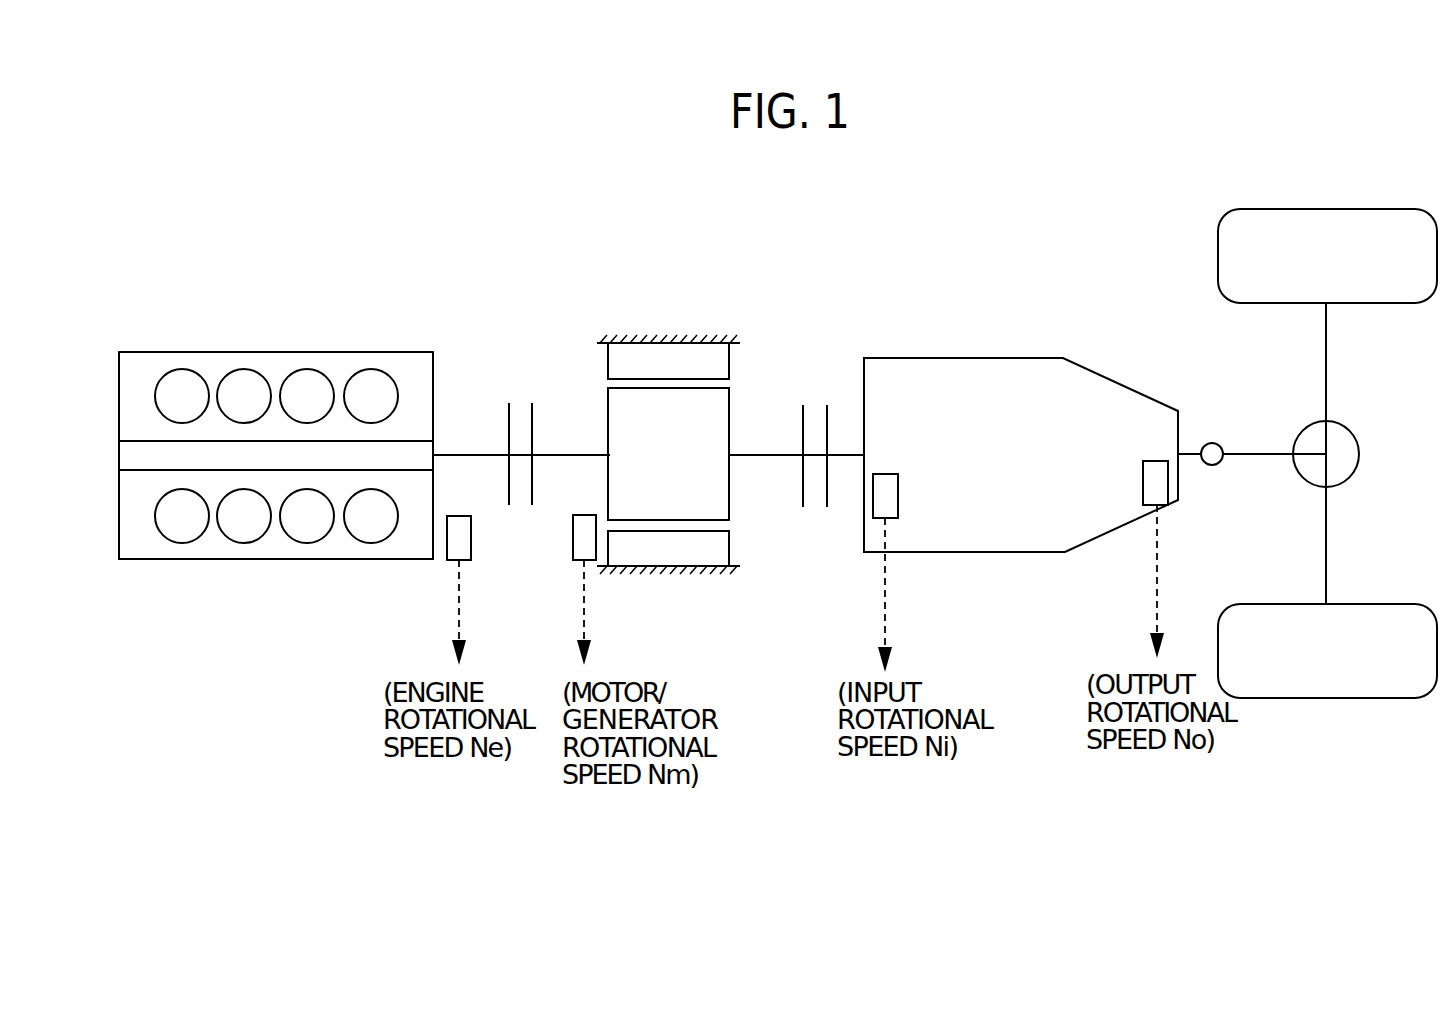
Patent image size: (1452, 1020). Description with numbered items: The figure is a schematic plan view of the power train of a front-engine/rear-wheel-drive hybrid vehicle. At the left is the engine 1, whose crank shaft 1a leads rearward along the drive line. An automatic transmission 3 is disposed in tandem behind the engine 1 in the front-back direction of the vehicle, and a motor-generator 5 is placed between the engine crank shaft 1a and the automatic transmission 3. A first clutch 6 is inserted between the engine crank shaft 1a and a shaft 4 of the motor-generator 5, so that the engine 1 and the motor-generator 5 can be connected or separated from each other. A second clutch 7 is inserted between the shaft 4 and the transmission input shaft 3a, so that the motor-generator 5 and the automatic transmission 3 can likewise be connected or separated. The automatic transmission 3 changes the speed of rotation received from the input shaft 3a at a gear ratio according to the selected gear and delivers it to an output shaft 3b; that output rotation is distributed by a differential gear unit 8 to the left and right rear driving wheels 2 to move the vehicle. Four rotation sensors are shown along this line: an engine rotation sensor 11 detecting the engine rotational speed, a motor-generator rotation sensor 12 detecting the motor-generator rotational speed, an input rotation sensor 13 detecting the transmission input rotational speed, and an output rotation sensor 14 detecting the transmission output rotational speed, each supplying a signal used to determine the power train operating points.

The engine 1 is at (222, 348).
The crank shaft 1a is at (470, 452).
The driving wheels 2 is at (1383, 208).
The automatic transmission 3 is at (991, 352).
The transmission input shaft 3a is at (842, 452).
The output shaft 3b is at (1187, 452).
The shaft 4 is at (763, 453).
The motor-generator 5 is at (650, 322).
The first clutch 6 is at (521, 392).
The second clutch 7 is at (816, 518).
The differential gear unit 8 is at (1359, 454).
The engine rotation sensor 11 is at (446, 560).
The motor-generator rotation sensor 12 is at (571, 560).
The input rotation sensor 13 is at (899, 507).
The output rotation sensor 14 is at (1143, 495).